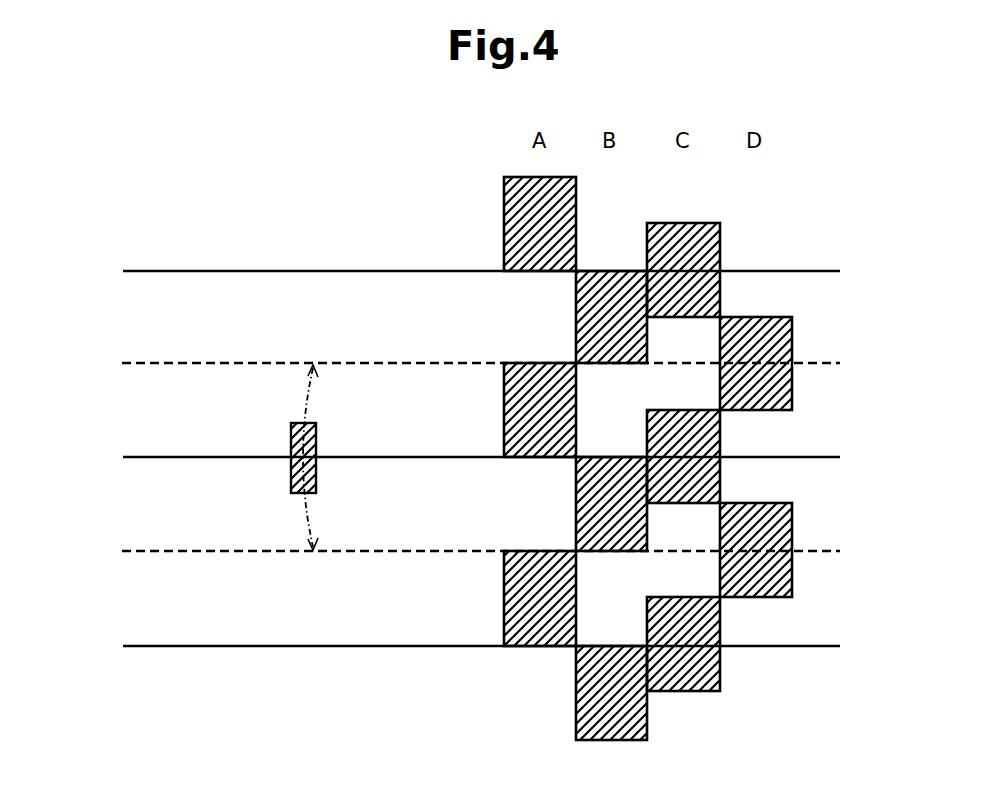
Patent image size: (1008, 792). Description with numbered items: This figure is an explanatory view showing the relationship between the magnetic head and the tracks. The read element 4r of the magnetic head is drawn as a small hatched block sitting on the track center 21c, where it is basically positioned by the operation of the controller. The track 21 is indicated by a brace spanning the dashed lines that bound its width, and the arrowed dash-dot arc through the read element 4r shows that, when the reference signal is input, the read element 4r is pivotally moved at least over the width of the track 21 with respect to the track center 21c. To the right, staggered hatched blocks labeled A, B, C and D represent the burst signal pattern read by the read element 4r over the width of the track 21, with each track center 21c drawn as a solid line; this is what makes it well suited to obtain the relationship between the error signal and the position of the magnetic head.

The track 21 is at (105, 366).
The track center 21c is at (827, 270).
The read element 4r is at (291, 438).